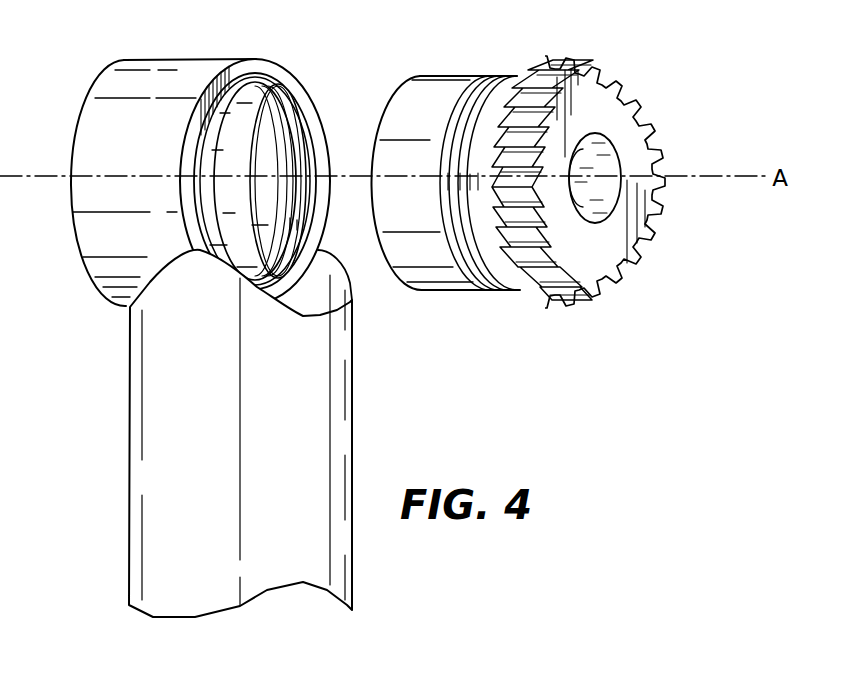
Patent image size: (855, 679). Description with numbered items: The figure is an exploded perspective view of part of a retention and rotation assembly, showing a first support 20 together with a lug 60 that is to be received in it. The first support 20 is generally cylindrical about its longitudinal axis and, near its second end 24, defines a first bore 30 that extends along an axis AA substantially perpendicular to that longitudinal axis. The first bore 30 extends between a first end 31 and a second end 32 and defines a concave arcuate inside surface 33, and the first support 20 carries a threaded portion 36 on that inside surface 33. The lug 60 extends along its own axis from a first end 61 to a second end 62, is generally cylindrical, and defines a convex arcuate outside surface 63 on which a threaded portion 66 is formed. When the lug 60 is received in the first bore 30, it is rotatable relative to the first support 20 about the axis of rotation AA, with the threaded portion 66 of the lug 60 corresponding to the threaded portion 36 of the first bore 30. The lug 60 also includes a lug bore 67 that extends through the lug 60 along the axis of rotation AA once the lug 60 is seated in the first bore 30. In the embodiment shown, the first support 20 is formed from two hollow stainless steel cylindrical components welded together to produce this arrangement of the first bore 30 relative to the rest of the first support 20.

The first support 20 is at (330, 450).
The second end 24 is at (182, 67).
The first bore 30 is at (213, 157).
The first end 31 is at (88, 93).
The second end 32 is at (272, 70).
The inside surface 33 is at (290, 168).
The threaded portion 36 is at (293, 157).
The lug 60 is at (494, 58).
The first end 61 is at (347, 163).
The second end 62 is at (628, 120).
The outside surface 63 is at (447, 76).
The threaded portion 66 is at (520, 72).
The lug bore 67 is at (607, 208).